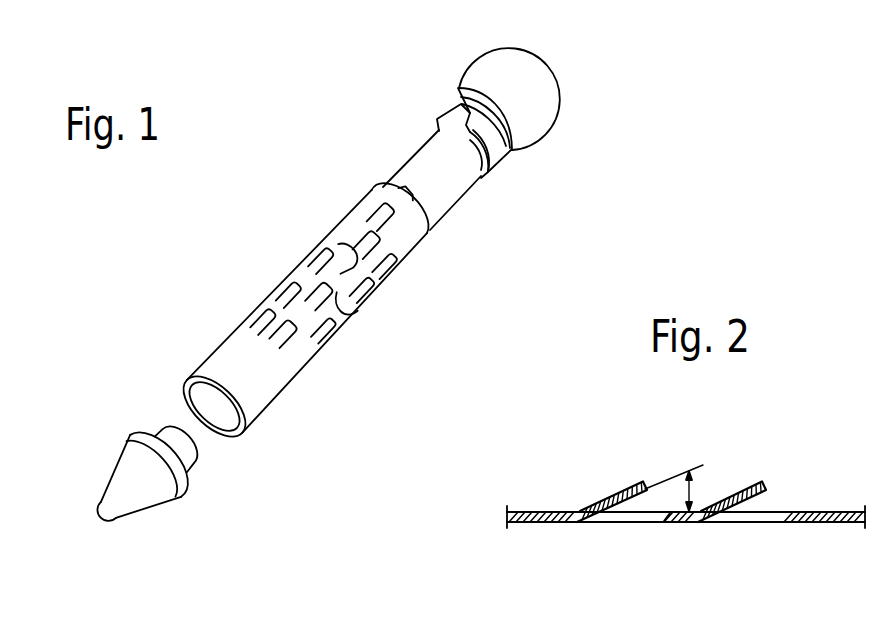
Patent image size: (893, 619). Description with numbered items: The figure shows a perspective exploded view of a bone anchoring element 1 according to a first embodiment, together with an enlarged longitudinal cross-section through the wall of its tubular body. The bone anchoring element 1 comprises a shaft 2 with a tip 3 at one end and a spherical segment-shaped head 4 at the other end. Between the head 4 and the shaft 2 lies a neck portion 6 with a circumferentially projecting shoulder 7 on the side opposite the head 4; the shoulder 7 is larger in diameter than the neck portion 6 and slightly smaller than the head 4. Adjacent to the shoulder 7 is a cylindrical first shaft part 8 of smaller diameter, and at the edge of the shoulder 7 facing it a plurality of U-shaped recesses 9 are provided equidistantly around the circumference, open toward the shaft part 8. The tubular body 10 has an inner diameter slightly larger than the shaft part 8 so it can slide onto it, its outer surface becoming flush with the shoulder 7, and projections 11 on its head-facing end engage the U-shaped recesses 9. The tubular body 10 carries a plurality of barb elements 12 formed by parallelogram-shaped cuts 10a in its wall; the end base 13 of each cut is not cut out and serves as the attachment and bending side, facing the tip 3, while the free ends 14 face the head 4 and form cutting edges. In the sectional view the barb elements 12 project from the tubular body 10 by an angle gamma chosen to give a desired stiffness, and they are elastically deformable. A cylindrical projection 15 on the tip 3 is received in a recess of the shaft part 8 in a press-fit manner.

In FIG. 1, the bone anchoring element 1 is at (313, 185).
In FIG. 1, the shaft 2 is at (307, 308).
In FIG. 1, the tip 3 is at (136, 484).
In FIG. 1, the head 4 is at (509, 99).
In FIG. 1, the neck portion 6 is at (485, 133).
In FIG. 1, the shoulder 7 is at (479, 154).
In FIG. 1, the cylindrical first shaft part 8 is at (435, 167).
In FIG. 1, the U-shaped recesses 9 is at (453, 117).
In FIG. 1, the tubular body 10 is at (307, 309).
In FIG. 2, the parallelogram-shaped cuts 10a is at (625, 522).
In FIG. 1, the projections 11 is at (407, 192).
In FIG. 1, the barb elements 12 is at (335, 281).
In FIG. 2, the barb elements 12 is at (617, 490).
In FIG. 1, the end base 13 is at (343, 306).
In FIG. 2, the end base 13 is at (578, 512).
In FIG. 1, the free ends 14 is at (344, 258).
In FIG. 2, the free ends 14 is at (650, 483).
In FIG. 1, the cylindrical projection 15 is at (180, 445).